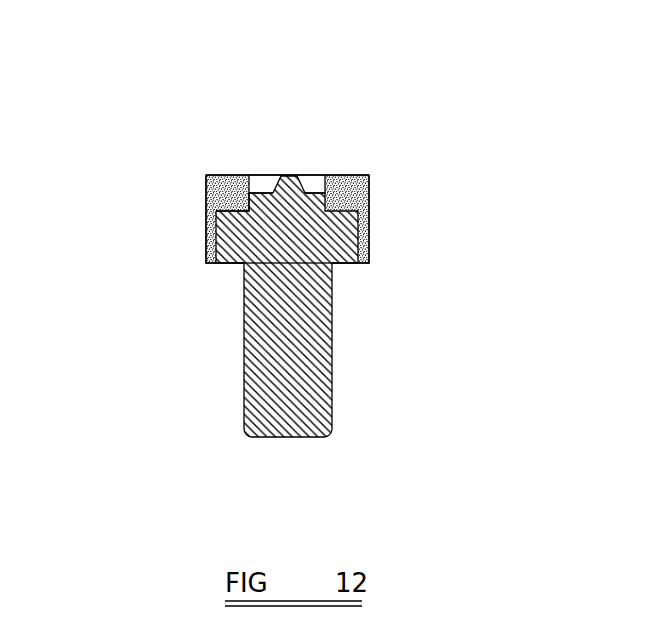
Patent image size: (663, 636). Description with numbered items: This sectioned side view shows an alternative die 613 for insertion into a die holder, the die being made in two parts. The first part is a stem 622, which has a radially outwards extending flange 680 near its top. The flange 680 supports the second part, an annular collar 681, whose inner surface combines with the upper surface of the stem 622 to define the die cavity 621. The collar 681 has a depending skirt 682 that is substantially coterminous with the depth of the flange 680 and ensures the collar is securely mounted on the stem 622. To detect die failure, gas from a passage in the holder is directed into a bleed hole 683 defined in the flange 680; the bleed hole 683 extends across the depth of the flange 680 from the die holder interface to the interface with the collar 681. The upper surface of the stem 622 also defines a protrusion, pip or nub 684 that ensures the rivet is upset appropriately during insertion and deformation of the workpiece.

The die 613 is at (182, 375).
The die cavity 621 is at (309, 176).
The stem 622 is at (312, 383).
The flange 680 is at (343, 248).
The annular collar 681 is at (369, 198).
The depending skirt 682 is at (369, 244).
The bleed hole 683 is at (249, 211).
The protrusion, pip or nub 684 is at (290, 176).